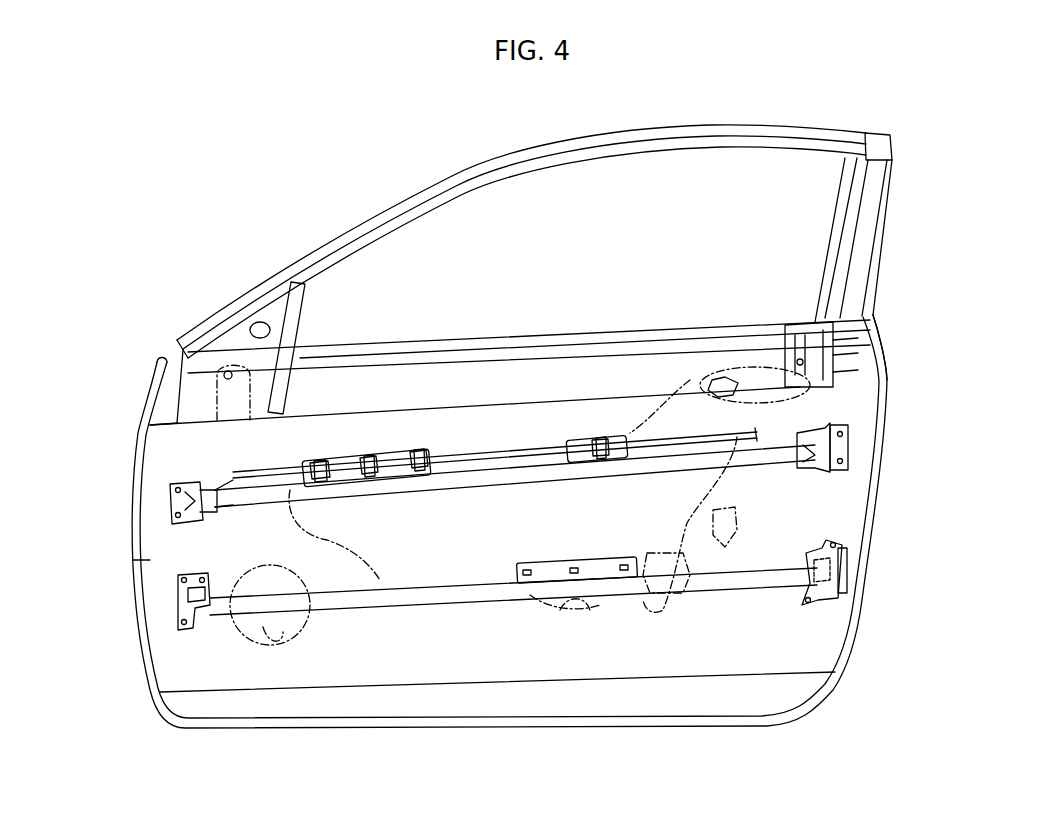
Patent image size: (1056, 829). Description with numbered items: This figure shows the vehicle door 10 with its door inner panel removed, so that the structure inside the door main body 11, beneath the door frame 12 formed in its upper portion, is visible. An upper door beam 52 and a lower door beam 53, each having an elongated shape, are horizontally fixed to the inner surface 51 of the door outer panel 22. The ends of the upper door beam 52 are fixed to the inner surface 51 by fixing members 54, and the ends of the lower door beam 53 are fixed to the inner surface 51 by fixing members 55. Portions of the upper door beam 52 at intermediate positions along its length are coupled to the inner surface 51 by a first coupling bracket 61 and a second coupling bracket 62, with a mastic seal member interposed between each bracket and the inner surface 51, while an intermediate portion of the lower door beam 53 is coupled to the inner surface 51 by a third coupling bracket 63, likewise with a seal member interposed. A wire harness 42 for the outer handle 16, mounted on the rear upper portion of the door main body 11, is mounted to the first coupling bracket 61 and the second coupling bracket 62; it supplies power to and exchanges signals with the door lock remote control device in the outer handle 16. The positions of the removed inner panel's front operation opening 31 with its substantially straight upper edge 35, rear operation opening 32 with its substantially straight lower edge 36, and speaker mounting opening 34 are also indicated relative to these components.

The vehicle door 10 is at (188, 254).
The door main body 11 is at (896, 438).
The door frame 12 is at (432, 178).
The outer handle 16 is at (762, 367).
The door outer panel 22 is at (893, 478).
The front operation opening 31 is at (375, 567).
The rear operation opening 32 is at (647, 576).
The speaker mounting opening 34 is at (265, 625).
The upper edge 35 is at (437, 537).
The lower edge 36 is at (573, 610).
The wire harness 42 is at (533, 445).
The inner surface 51 is at (783, 637).
The upper door beam 52 is at (227, 480).
The lower door beam 53 is at (223, 577).
The fixing members 54 is at (167, 495).
The fixing members 55 is at (177, 593).
The first coupling bracket 61 is at (395, 450).
The second coupling bracket 62 is at (612, 440).
The third coupling bracket 63 is at (547, 567).